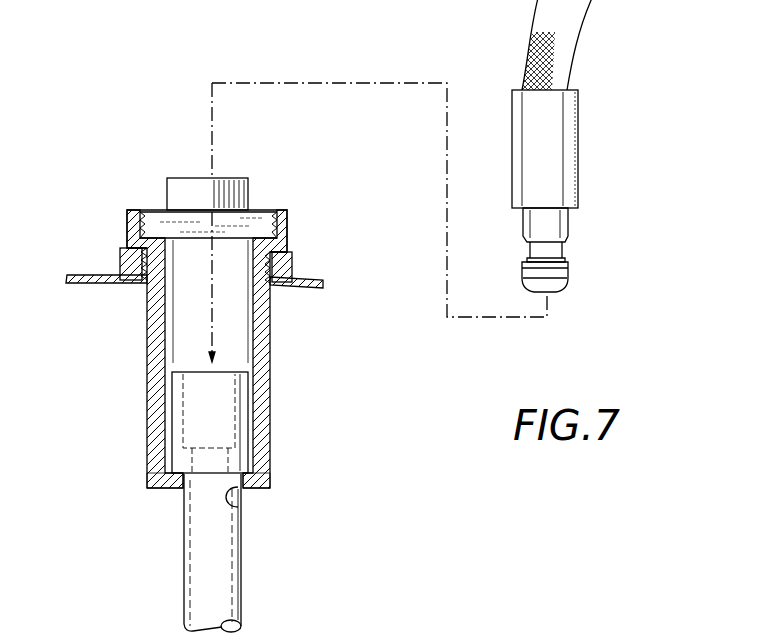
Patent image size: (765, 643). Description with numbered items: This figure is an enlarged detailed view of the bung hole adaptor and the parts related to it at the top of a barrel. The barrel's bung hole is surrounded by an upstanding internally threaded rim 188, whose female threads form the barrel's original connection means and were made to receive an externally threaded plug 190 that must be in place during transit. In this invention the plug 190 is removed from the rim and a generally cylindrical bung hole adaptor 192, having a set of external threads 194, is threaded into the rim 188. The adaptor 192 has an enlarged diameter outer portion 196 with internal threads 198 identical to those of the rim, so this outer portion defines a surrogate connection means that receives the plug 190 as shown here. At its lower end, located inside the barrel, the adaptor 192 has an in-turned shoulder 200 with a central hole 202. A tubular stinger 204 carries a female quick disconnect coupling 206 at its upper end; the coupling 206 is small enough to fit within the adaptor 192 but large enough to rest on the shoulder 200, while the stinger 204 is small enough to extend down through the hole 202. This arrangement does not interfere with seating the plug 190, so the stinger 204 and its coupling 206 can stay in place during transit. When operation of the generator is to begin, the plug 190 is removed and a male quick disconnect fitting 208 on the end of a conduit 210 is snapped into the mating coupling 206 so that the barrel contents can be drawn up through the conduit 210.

The internally threaded rim 188 is at (291, 262).
The externally threaded plug 190 is at (240, 216).
The bung hole adaptor 192 is at (270, 350).
The external threads 194 is at (121, 258).
The enlarged diameter outer portion 196 is at (120, 218).
The internal threads 198 is at (146, 212).
The in-turned shoulder 200 is at (175, 480).
The central hole 202 is at (242, 495).
The tubular stinger 204 is at (222, 572).
The female quick disconnect coupling 206 is at (193, 412).
The male quick disconnect fitting 208 is at (568, 265).
The conduit 210 is at (578, 35).